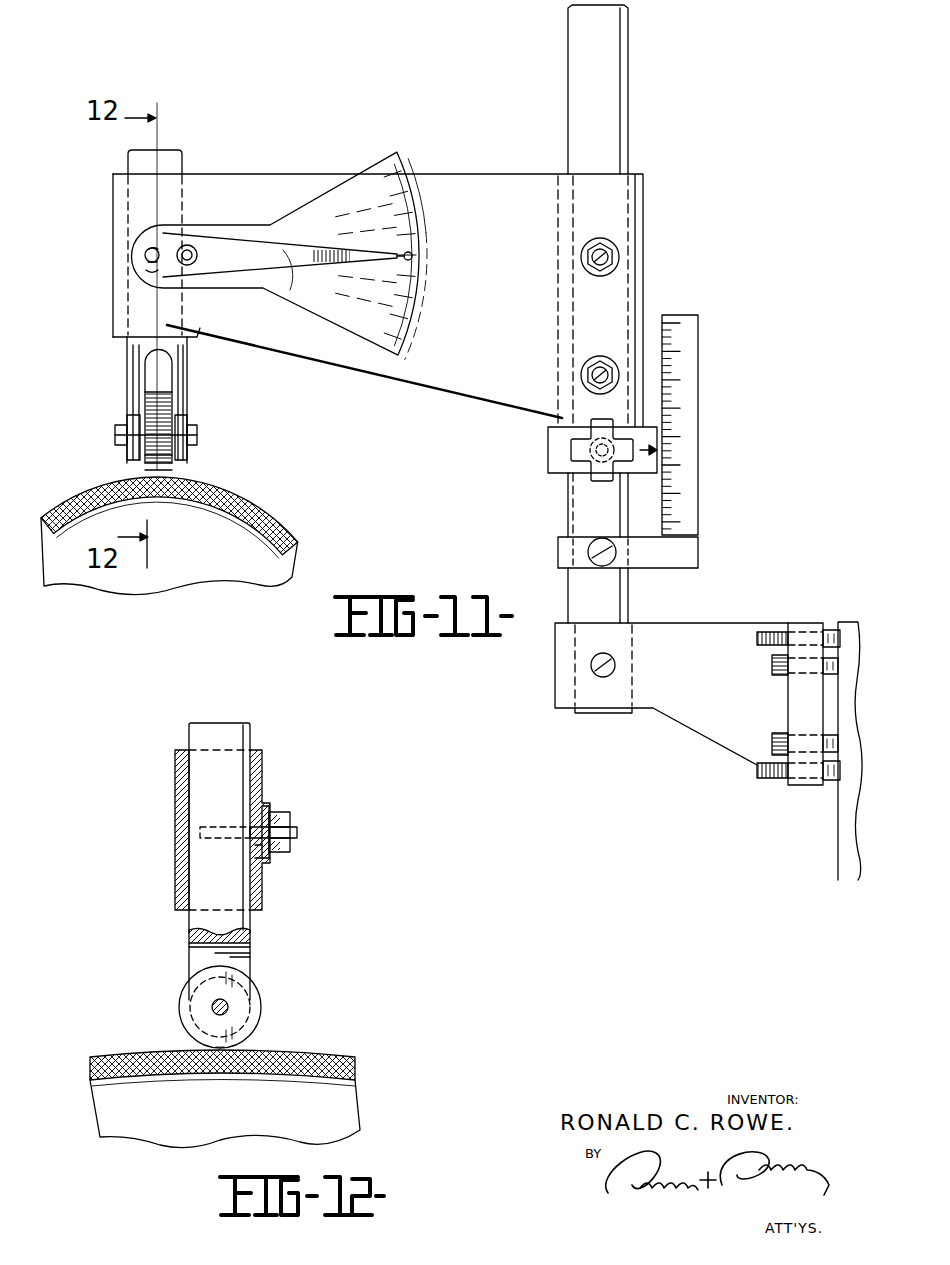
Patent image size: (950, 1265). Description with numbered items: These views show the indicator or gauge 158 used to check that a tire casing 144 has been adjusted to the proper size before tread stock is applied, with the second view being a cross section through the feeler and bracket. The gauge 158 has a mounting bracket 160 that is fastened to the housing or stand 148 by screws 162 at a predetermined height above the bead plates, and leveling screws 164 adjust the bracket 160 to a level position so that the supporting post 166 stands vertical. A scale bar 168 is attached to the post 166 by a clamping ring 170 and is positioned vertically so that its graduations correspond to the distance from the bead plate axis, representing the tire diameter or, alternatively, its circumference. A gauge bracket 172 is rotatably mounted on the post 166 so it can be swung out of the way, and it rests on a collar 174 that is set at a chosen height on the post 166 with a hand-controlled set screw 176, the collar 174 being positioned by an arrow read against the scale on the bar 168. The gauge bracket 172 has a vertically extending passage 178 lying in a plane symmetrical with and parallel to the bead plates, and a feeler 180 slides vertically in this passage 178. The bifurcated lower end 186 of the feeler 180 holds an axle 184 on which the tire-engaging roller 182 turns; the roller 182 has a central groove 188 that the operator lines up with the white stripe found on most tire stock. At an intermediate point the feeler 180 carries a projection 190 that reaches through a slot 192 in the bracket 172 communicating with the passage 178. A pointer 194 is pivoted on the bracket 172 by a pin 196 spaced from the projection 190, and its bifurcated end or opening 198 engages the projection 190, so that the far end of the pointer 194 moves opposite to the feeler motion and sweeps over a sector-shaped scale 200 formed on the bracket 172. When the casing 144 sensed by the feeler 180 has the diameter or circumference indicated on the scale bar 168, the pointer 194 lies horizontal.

In FIG. 11, the tire casing 144 is at (294, 534).
In FIG. 12, the tire casing 144 is at (317, 1053).
In FIG. 11, the housing or stand 148 is at (838, 829).
In FIG. 11, the indicator or gauge 158 is at (266, 110).
In FIG. 12, the indicator or gauge 158 is at (130, 771).
In FIG. 11, the mounting bracket 160 is at (697, 740).
In FIG. 11, the screws 162 is at (773, 730).
In FIG. 11, the leveling screws 164 is at (766, 613).
In FIG. 11, the supporting post 166 is at (625, 70).
In FIG. 11, the scale bar 168 is at (700, 423).
In FIG. 11, the clamping ring 170 is at (558, 550).
In FIG. 11, the gauge bracket 172 is at (511, 173).
In FIG. 11, the collar 174 is at (548, 434).
In FIG. 11, the hand-controlled set screw 176 is at (572, 452).
In FIG. 11, the vertically extending passage 178 is at (125, 195).
In FIG. 12, the vertically extending passage 178 is at (193, 800).
In FIG. 11, the feeler 180 is at (128, 160).
In FIG. 12, the feeler 180 is at (252, 731).
In FIG. 11, the tire-engaging portion or roller 182 is at (176, 470).
In FIG. 12, the tire-engaging portion or roller 182 is at (261, 1010).
In FIG. 11, the axle 184 is at (198, 433).
In FIG. 12, the axle 184 is at (226, 1003).
In FIG. 11, the bifurcated lower end 186 is at (187, 399).
In FIG. 12, the bifurcated lower end 186 is at (252, 954).
In FIG. 11, the groove 188 is at (146, 410).
In FIG. 12, the groove 188 is at (179, 1000).
In FIG. 11, the projection 190 is at (147, 253).
In FIG. 12, the projection 190 is at (297, 827).
In FIG. 11, the slot 192 is at (151, 272).
In FIG. 12, the slot 192 is at (264, 855).
In FIG. 11, the pointer 194 is at (285, 270).
In FIG. 12, the pointer 194 is at (273, 808).
In FIG. 11, the pin 196 is at (189, 247).
In FIG. 12, the pin 196 is at (291, 844).
In FIG. 11, the bifurcated end or opening 198 is at (150, 262).
In FIG. 11, the sector-shaped scale 200 is at (422, 292).